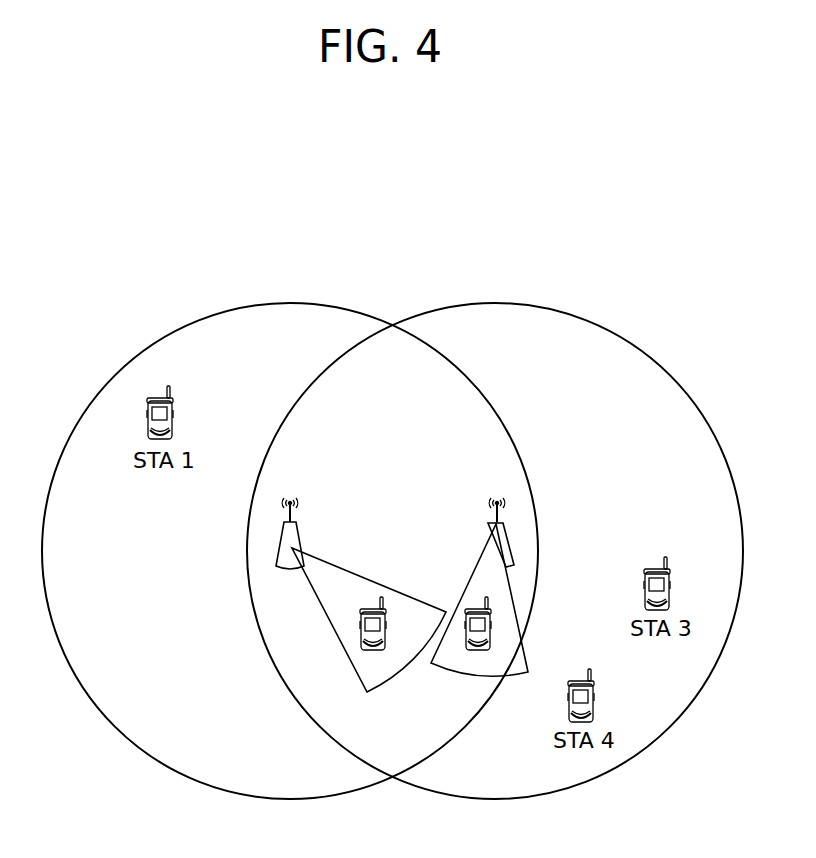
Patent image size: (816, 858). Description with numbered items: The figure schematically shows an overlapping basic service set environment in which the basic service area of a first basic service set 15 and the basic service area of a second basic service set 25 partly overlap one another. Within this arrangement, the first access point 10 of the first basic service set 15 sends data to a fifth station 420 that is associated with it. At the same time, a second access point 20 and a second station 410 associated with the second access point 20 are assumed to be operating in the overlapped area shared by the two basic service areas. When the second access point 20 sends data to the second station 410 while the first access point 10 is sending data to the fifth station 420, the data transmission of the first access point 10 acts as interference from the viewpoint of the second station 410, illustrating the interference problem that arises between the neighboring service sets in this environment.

The BSS 1 15 is at (290, 551).
The BSS 2 25 is at (495, 551).
The AP 1 10 is at (359, 565).
The AP 2 20 is at (479, 557).
The STA 5 420 is at (378, 655).
The STA 2 410 is at (496, 655).